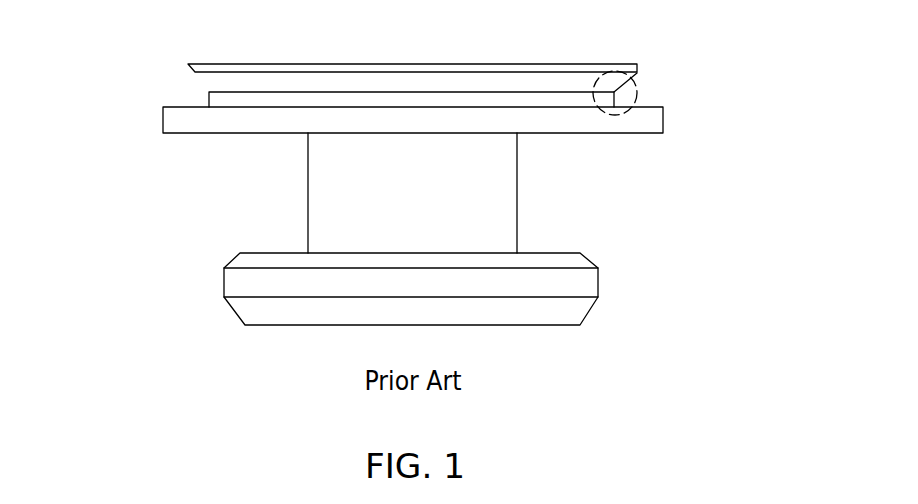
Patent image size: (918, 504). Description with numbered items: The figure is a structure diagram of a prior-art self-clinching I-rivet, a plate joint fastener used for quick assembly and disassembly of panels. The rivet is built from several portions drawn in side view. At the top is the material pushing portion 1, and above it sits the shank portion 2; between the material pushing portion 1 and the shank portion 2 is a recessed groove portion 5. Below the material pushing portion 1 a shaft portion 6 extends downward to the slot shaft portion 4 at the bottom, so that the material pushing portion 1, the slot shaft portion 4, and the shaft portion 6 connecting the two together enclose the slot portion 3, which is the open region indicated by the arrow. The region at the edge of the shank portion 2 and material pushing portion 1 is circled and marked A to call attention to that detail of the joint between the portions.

The material pushing portion 1 is at (213, 121).
The shank portion 2 is at (213, 83).
The slot portion 3 is at (416, 253).
The slot shaft portion 4 is at (270, 302).
The recessed groove portion 5 is at (178, 90).
The shaft portion 6 is at (322, 210).
The detail region A is at (640, 92).